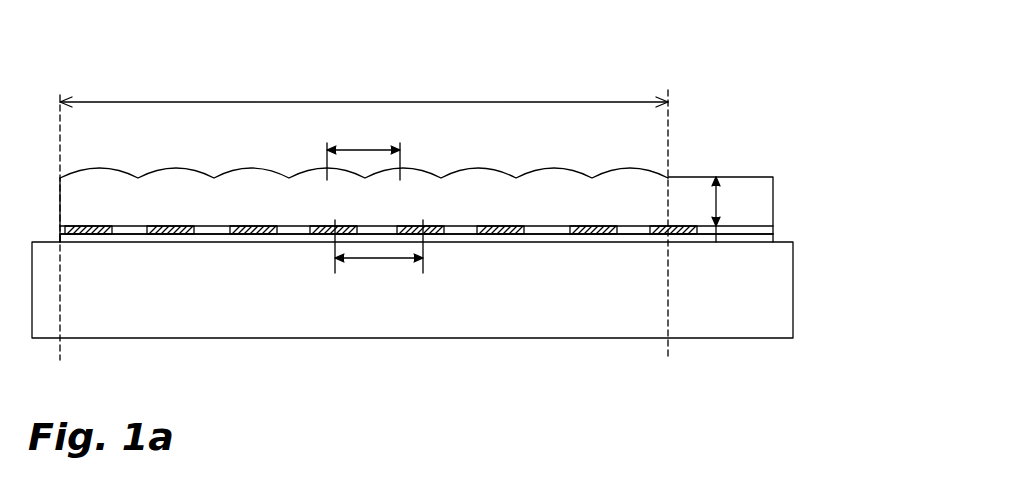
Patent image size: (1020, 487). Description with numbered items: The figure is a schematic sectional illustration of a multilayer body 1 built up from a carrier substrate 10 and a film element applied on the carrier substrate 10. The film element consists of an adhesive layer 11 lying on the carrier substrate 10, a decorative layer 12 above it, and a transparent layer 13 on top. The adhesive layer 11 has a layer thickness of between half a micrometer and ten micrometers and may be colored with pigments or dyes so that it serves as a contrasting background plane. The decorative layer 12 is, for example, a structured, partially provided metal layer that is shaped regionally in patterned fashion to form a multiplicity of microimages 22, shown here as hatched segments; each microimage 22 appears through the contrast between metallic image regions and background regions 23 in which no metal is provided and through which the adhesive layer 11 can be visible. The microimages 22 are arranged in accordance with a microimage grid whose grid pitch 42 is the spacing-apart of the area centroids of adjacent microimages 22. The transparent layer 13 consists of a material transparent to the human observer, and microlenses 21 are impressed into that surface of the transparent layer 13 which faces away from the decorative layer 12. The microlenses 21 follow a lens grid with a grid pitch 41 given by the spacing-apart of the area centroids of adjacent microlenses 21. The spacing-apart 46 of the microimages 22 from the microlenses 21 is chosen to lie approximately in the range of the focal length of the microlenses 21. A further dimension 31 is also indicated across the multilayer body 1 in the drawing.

The multilayer body 1 is at (632, 45).
The carrier substrate 10 is at (792, 295).
The adhesive layer 11 is at (775, 241).
The decorative layer 12 is at (773, 232).
The transparent layer 13 is at (442, 180).
The microlenses 21 is at (107, 167).
The microimages 22 is at (248, 238).
The background regions 23 is at (288, 218).
The total width 31 is at (364, 216).
The grid pitch of the lens grid 41 is at (363, 150).
The grid pitch of the microimage grid 42 is at (379, 253).
The spacing-apart of the microimages from the microlenses 46 is at (729, 196).